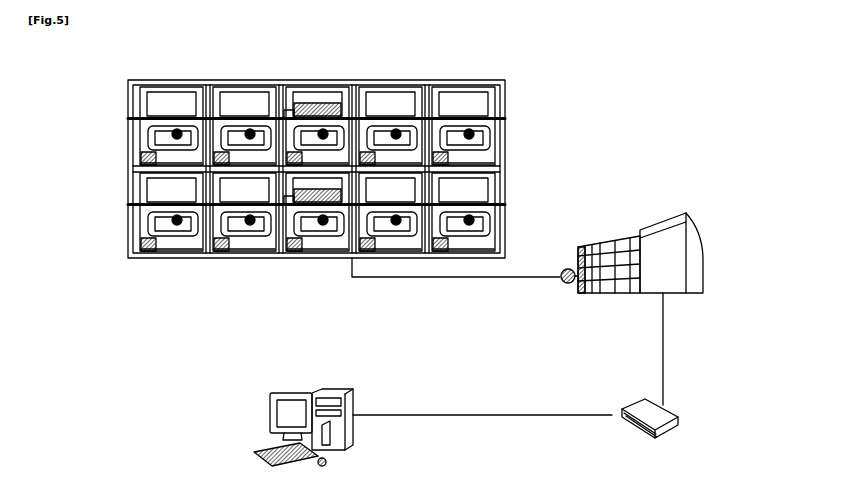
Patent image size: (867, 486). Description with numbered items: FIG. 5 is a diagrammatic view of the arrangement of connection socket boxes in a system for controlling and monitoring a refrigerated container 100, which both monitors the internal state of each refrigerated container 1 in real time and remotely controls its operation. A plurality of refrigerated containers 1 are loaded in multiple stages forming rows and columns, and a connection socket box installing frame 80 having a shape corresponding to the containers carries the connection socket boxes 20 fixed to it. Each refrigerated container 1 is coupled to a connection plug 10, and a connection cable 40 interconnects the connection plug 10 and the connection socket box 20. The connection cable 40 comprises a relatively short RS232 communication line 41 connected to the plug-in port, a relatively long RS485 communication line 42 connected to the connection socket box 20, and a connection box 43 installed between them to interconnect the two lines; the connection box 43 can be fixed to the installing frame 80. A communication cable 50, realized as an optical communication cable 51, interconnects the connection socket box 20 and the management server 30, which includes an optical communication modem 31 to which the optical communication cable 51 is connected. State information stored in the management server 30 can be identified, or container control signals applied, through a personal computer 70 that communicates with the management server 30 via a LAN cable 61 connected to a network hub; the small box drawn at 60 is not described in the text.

The system for controlling and monitoring a refrigerated container 100 is at (106, 57).
The refrigerated container 1 is at (255, 94).
The connection socket box 20 is at (315, 100).
The connection plug 10 is at (136, 124).
The connection cable 40 is at (90, 205).
The RS232 communication line 41 is at (130, 142).
The RS485 communication line 42 is at (158, 181).
The connection box 43 is at (135, 163).
The frame for installing the connection socket box 80 is at (516, 103).
The management server 30 is at (703, 258).
The optical communication modem 31 is at (565, 262).
The communication cable 50 is at (441, 345).
The optical communication cable 51 is at (438, 282).
The LAN cable 61 is at (663, 356).
The controller 60 is at (684, 428).
The personal computer 70 is at (287, 393).